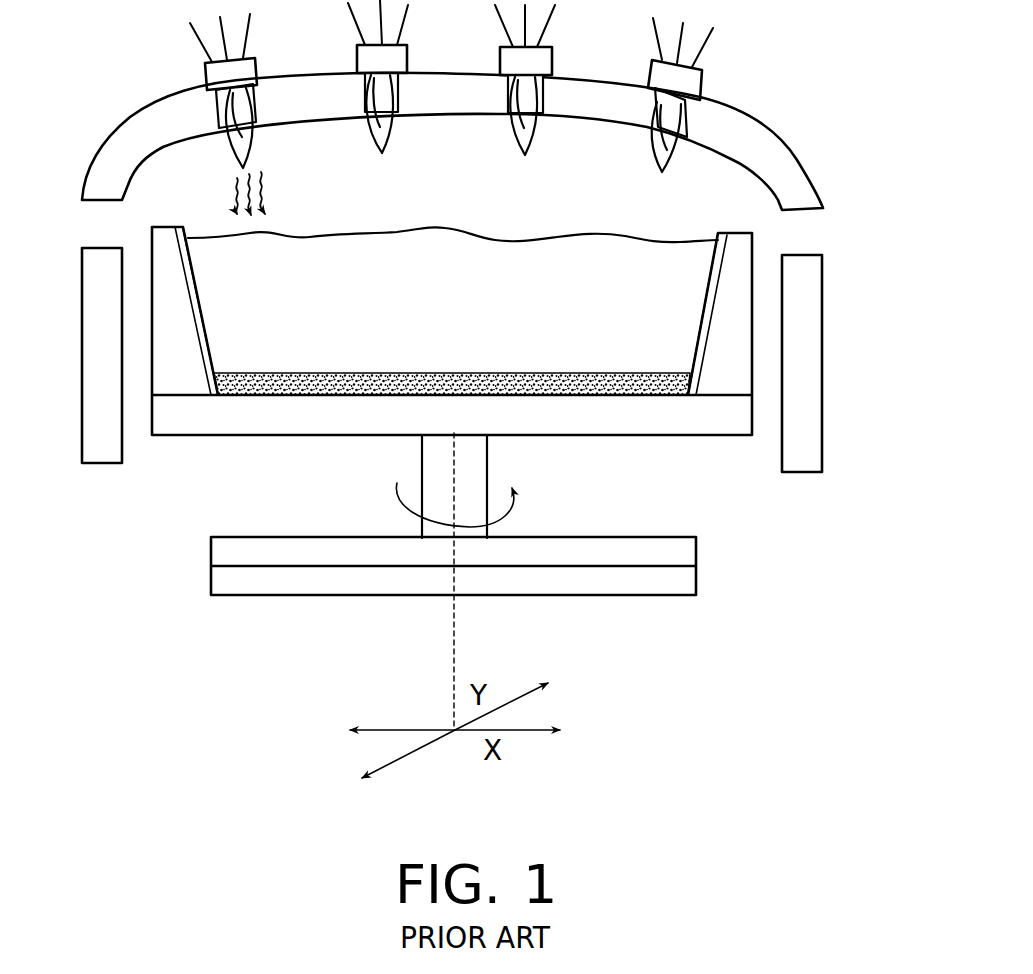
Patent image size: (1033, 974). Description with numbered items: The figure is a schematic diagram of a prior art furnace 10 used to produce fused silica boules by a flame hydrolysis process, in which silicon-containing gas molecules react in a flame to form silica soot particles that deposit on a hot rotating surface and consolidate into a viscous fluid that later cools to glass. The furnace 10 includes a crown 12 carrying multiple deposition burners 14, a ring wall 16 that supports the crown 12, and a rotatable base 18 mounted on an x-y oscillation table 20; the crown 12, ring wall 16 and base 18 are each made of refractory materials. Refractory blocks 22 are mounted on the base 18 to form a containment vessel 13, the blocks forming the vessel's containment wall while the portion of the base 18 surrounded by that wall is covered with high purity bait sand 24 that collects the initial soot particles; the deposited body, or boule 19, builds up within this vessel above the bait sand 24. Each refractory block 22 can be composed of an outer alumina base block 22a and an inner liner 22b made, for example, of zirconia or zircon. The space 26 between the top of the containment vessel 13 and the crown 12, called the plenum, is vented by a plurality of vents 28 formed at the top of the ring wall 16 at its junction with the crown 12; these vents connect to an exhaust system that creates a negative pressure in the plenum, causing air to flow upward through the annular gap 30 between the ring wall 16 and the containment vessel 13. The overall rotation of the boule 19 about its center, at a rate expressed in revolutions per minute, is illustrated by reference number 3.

The boule rotation 3 is at (500, 518).
The furnace 10 is at (163, 523).
The crown 12 is at (800, 187).
The containment vessel 13 is at (640, 226).
The deposition burners 14 is at (207, 72).
The ring wall 16 is at (808, 388).
The rotatable base 18 is at (312, 422).
The melt 19 is at (332, 304).
The x-y oscillation table 20 is at (572, 585).
The refractory blocks 22 is at (472, 331).
The outer alumina base block 22a is at (730, 307).
The inner liner 22b is at (707, 307).
The bait sand 24 is at (400, 372).
The plenum 26 is at (383, 205).
The vents 28 is at (810, 228).
The annular gap 30 is at (767, 435).